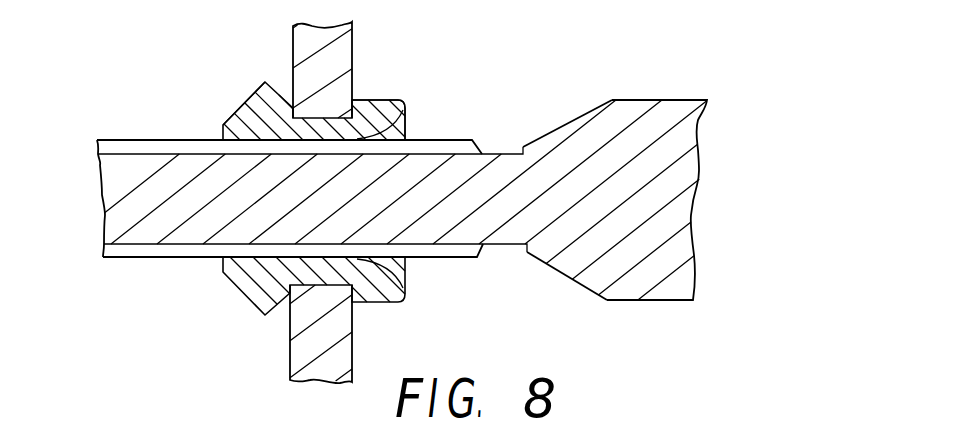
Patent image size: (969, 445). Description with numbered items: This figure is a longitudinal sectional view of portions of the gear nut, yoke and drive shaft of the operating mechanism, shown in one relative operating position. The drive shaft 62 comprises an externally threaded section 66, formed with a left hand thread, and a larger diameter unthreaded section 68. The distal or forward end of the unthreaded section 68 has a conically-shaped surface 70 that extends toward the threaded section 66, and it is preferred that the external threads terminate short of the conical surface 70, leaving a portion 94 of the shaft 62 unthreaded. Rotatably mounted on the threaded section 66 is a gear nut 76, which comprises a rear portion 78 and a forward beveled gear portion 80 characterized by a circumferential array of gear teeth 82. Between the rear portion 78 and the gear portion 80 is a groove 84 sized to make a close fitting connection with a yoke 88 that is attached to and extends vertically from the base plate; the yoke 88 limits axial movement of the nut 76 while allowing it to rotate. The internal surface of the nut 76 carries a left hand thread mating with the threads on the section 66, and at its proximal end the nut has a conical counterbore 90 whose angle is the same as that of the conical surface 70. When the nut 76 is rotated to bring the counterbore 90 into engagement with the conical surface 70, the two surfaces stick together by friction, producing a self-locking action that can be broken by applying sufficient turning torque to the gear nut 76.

The drive shaft 62 is at (82, 188).
The externally threaded section 66 is at (157, 140).
The unthreaded section 68 is at (625, 99).
The conically-shaped surface 70 is at (547, 133).
The gear nut 76 is at (416, 93).
The rear portion 78 is at (370, 99).
The beveled gear portion 80 is at (245, 128).
The gear teeth 82 is at (240, 106).
The groove 84 is at (342, 106).
The yoke 88 is at (290, 337).
The conical counterbore 90 is at (404, 126).
The unthreaded portion 94 is at (508, 247).